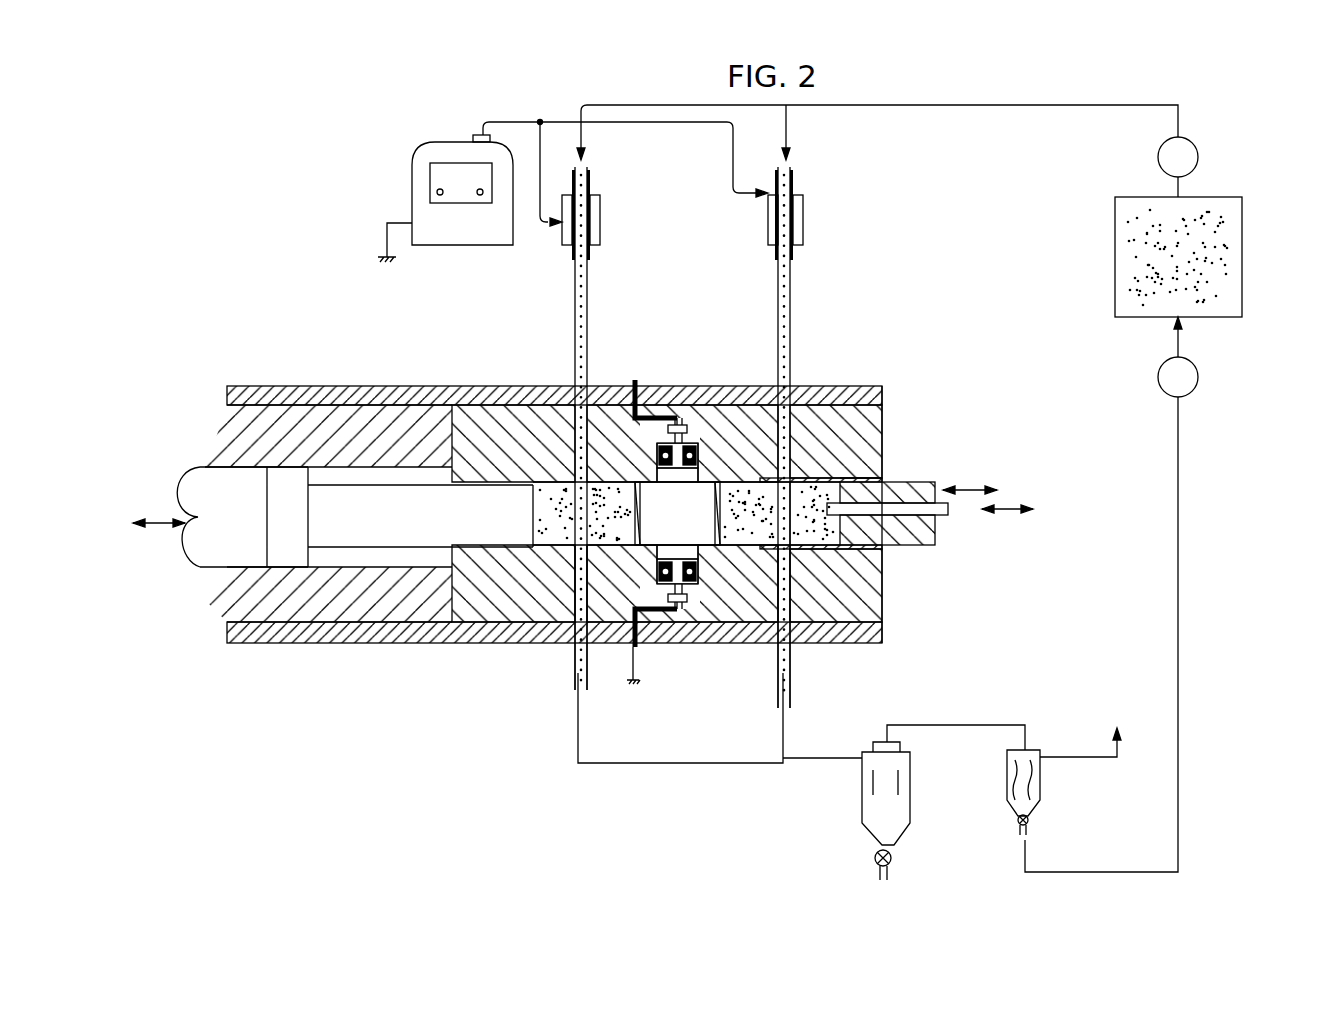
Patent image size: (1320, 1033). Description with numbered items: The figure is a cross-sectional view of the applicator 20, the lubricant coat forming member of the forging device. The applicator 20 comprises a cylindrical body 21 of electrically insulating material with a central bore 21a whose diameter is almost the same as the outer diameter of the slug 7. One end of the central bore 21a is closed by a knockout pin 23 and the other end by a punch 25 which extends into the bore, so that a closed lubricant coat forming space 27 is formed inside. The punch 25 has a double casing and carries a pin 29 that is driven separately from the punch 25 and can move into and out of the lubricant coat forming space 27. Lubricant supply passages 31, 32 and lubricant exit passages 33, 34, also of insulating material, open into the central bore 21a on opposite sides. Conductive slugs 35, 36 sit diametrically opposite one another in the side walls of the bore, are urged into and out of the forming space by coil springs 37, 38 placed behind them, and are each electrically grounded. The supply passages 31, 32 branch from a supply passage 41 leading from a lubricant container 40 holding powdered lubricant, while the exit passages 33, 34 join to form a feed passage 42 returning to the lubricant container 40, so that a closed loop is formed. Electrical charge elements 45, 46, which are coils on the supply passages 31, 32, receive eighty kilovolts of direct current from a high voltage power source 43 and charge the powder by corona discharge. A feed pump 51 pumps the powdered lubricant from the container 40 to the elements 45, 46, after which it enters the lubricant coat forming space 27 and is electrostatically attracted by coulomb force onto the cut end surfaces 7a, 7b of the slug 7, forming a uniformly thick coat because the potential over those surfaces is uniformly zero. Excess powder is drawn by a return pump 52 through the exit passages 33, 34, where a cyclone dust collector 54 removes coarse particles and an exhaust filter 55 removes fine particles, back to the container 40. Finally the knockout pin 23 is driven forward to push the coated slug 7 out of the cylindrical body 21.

The slug 7 is at (722, 488).
The cut end surface 7a is at (638, 489).
The cut end surface 7b is at (712, 523).
The applicator 20 is at (505, 726).
The cylindrical body 21 is at (867, 595).
The central bore 21a is at (878, 458).
The knockout pin 23 is at (353, 493).
The punch 25 is at (935, 478).
The lubricant coat forming space 27 is at (788, 500).
The pin 29 is at (943, 513).
The lubricant supply passage 31 is at (552, 428).
The lubricant supply passage 32 is at (793, 352).
The lubricant exit passage 33 is at (575, 657).
The lubricant exit passage 34 is at (792, 660).
The slug 35 is at (685, 360).
The slug 36 is at (722, 590).
The coil spring 37 is at (712, 478).
The coil spring 38 is at (697, 600).
The lubricant container 40 is at (1225, 235).
The supply passage 41 is at (910, 104).
The feed passage 42 is at (797, 762).
The high voltage power source 43 is at (436, 157).
The electrical charge element 45 is at (570, 242).
The electrical charge element 46 is at (767, 230).
The feed pump 51 is at (1198, 155).
The return pump 52 is at (1198, 378).
The cyclone dust collector 54 is at (870, 810).
The exhaust filter 55 is at (1040, 795).